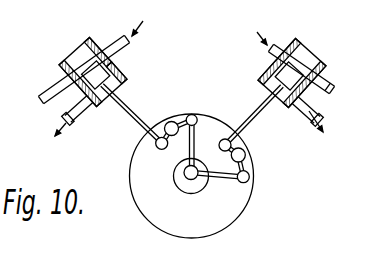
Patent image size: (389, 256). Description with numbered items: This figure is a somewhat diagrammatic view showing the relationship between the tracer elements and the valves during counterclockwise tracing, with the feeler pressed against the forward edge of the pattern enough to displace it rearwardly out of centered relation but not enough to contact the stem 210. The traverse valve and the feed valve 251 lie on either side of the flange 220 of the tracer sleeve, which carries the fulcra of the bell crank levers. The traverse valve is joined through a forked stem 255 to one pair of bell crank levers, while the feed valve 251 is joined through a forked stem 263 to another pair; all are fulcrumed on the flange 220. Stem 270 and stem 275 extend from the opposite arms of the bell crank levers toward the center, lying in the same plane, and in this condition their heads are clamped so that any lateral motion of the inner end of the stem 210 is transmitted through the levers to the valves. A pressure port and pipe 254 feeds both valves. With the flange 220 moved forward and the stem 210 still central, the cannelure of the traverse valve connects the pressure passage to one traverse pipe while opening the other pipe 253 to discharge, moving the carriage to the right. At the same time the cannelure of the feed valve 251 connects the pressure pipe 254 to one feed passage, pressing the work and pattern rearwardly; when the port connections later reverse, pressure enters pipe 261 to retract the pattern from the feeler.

The stem 210 is at (190, 176).
The flange 220 is at (147, 203).
The feed valve 251 is at (318, 57).
The port and pipe 253 is at (54, 78).
The pressure port and pipe 254 is at (122, 52).
The forked stem 255 is at (137, 116).
The port and passage 261 is at (332, 85).
The forked stem 263 is at (257, 110).
The stem 270 is at (194, 150).
The stem 275 is at (226, 181).